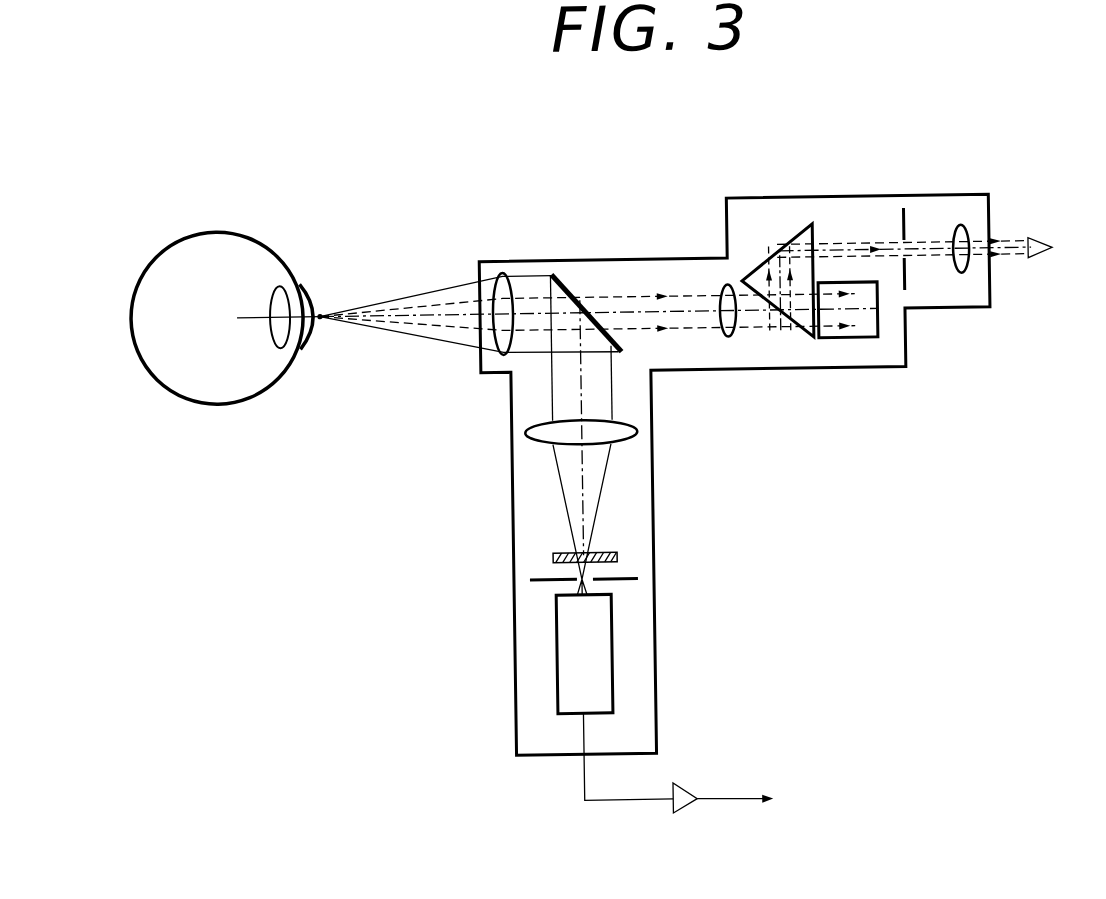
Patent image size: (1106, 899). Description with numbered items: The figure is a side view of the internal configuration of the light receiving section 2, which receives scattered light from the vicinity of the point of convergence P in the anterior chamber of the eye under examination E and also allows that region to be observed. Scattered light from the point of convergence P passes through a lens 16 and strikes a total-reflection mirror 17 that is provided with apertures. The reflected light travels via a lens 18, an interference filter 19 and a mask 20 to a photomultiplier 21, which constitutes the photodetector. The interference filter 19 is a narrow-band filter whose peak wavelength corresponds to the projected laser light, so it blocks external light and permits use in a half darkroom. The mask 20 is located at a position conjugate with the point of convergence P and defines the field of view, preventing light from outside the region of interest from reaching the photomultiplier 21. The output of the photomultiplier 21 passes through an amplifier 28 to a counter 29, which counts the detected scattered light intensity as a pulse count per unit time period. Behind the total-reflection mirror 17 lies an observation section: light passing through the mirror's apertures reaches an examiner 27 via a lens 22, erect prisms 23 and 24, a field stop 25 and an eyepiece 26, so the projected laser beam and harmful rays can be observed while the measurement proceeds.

The light receiving section 2 is at (651, 443).
The eye under examination E is at (232, 226).
The point of convergence P is at (312, 304).
The lens 16 is at (504, 269).
The total-reflection mirror 17 is at (566, 279).
The lens 18 is at (528, 432).
The interference filter 19 is at (549, 552).
The mask 20 is at (528, 586).
The photomultiplier 21 is at (543, 646).
The lens 22 is at (722, 287).
The erect prism 23 is at (862, 344).
The erect prism 24 is at (796, 231).
The field stop 25 is at (898, 224).
The eyepiece 26 is at (968, 280).
The examiner 27 is at (1046, 232).
The amplifier 28 is at (683, 811).
The counter 29 is at (756, 801).